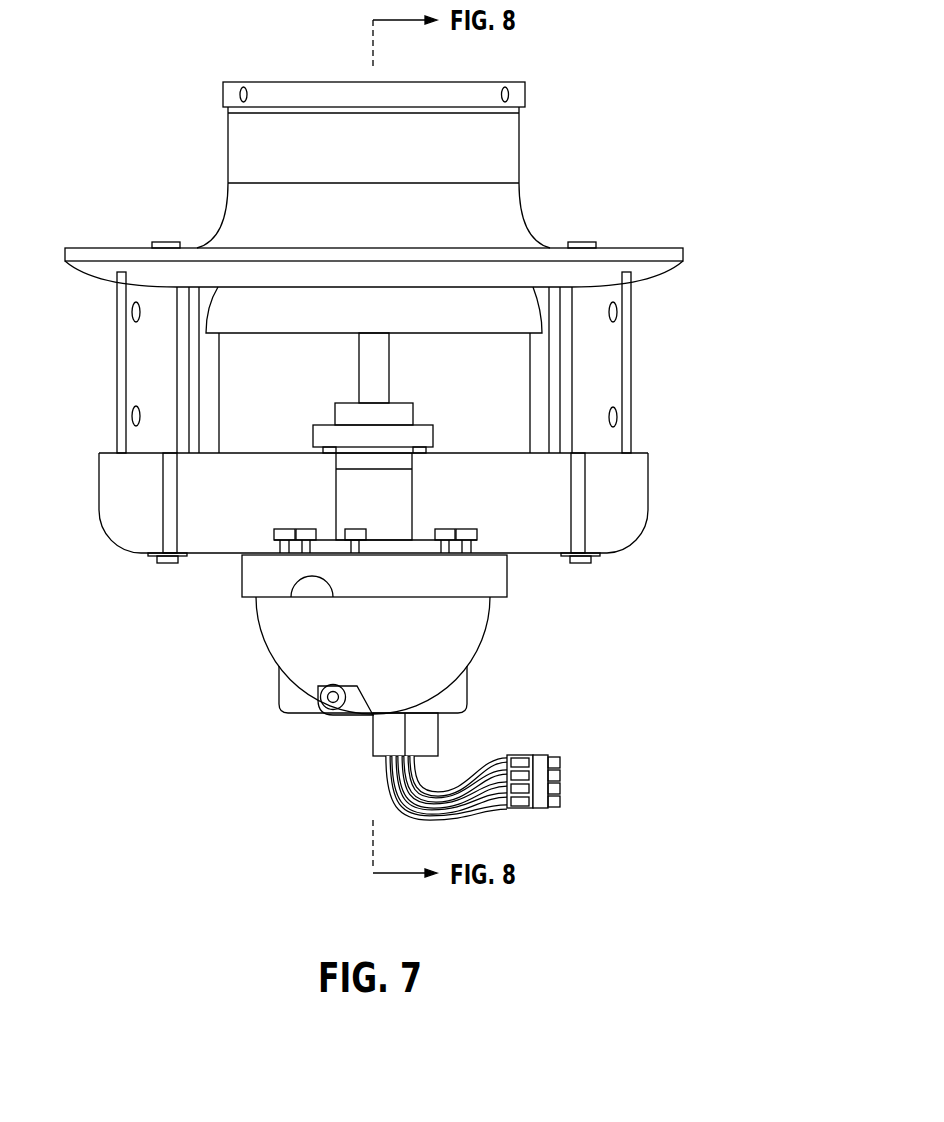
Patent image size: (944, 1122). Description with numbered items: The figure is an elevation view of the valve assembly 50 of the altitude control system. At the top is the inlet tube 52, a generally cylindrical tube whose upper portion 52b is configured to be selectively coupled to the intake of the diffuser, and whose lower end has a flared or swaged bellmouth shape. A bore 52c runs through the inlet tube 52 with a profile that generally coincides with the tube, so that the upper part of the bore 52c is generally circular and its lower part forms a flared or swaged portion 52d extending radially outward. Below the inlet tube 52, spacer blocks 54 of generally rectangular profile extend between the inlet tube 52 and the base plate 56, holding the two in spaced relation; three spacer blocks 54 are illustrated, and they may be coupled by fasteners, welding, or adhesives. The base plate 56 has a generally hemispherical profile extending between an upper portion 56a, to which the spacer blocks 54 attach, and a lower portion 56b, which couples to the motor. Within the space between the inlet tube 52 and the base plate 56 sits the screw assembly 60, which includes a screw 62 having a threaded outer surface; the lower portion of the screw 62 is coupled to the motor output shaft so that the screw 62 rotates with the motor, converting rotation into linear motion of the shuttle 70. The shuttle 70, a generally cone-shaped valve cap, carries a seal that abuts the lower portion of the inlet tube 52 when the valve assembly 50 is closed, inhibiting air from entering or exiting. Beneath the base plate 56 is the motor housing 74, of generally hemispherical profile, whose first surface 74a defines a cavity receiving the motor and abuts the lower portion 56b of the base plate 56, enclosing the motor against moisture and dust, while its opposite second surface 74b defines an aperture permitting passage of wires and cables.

The valve assembly 50 is at (398, 425).
The inlet tube 52 is at (362, 183).
The upper portion of inlet tube 52b is at (517, 80).
The bore 52c is at (259, 74).
The flared or swaged portion 52d is at (217, 290).
The spacer block 54 is at (640, 365).
The base plate 56 is at (386, 515).
The upper portion of base plate 56a is at (242, 452).
The lower portion of base plate 56b is at (547, 556).
The screw assembly 60 is at (478, 436).
The screw 62 is at (391, 375).
The shuttle 70 is at (242, 341).
The motor housing 74 is at (383, 680).
The first surface of motor housing 74a is at (492, 545).
The second surface of motor housing 74b is at (357, 722).